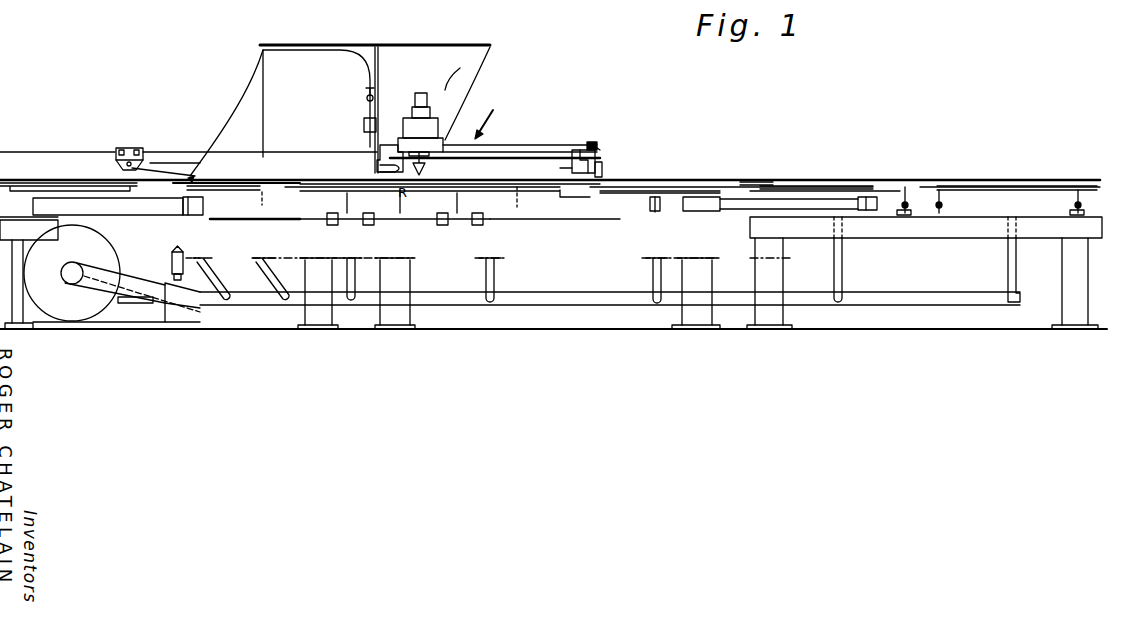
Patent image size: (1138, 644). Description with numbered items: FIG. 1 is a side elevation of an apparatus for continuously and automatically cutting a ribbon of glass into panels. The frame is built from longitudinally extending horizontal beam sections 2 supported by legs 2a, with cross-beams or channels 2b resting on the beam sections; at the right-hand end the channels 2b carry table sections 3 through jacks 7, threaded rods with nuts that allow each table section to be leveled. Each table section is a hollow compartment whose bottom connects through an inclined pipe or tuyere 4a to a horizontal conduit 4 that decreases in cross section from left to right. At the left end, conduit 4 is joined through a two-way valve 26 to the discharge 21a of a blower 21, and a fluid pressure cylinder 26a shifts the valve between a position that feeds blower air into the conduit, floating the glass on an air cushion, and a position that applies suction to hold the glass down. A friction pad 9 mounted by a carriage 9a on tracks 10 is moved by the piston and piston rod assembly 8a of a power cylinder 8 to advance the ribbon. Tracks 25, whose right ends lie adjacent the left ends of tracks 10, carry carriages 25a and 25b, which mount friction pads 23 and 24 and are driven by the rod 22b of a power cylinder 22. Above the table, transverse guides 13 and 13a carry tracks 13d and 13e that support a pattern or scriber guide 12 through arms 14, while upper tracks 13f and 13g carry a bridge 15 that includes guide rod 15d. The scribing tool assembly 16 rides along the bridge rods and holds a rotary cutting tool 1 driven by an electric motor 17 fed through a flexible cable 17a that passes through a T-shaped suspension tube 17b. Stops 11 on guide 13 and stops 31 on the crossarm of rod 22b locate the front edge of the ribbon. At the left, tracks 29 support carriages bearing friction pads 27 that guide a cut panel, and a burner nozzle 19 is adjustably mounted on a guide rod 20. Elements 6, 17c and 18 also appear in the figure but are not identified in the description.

The rotary scribing or cutting tool 1 is at (426, 176).
The horizontal beam sections 2 is at (964, 232).
The legs 2a is at (400, 278).
The cross-beams or channels 2b is at (898, 213).
The table sections 3 is at (885, 182).
The conduit 4 is at (808, 296).
The pipe or tuyere 4a is at (213, 273).
The rail section 6 is at (752, 182).
The jacks 7 is at (939, 200).
The power cylinder 8 is at (866, 212).
The piston and piston rod assembly 8a is at (703, 212).
The friction pad 9 is at (668, 188).
The carriage 9a is at (640, 224).
The tracks 10 is at (588, 223).
The stops 11 is at (603, 176).
The pattern or scriber guide 12 is at (551, 157).
The transverse guide 13 is at (597, 160).
The transverse guide 13a is at (378, 160).
The track 13d is at (572, 172).
The track 13e is at (380, 172).
The track 13f is at (590, 150).
The track 13g is at (380, 145).
The arms 14 is at (589, 143).
The bridge 15 is at (493, 115).
The guide rod 15d is at (514, 145).
The rotary cutting or scribing tool assembly 16 is at (432, 130).
The electric motor 17 is at (421, 93).
The flexible cable 17a is at (450, 69).
The T-shaped suspension tube 17b is at (392, 44).
The hood 17c is at (487, 64).
The stop 18 is at (364, 125).
The burner nozzle 19 is at (166, 178).
The guide rod 20 is at (129, 148).
The blower 21 is at (73, 322).
The outlet or discharge 21a is at (137, 318).
The power cylinder 22 is at (156, 218).
The rod 22b is at (264, 200).
The friction pad 23 is at (470, 188).
The friction pad 24 is at (333, 224).
The tracks 25 is at (256, 222).
The carriage 25a is at (483, 225).
The carriage 25b is at (372, 226).
The two-way valve 26 is at (190, 327).
The fluid pressure cylinder 26a is at (183, 256).
The friction pads 27 is at (196, 175).
The tracks 29 is at (50, 151).
The stops 31 is at (430, 225).